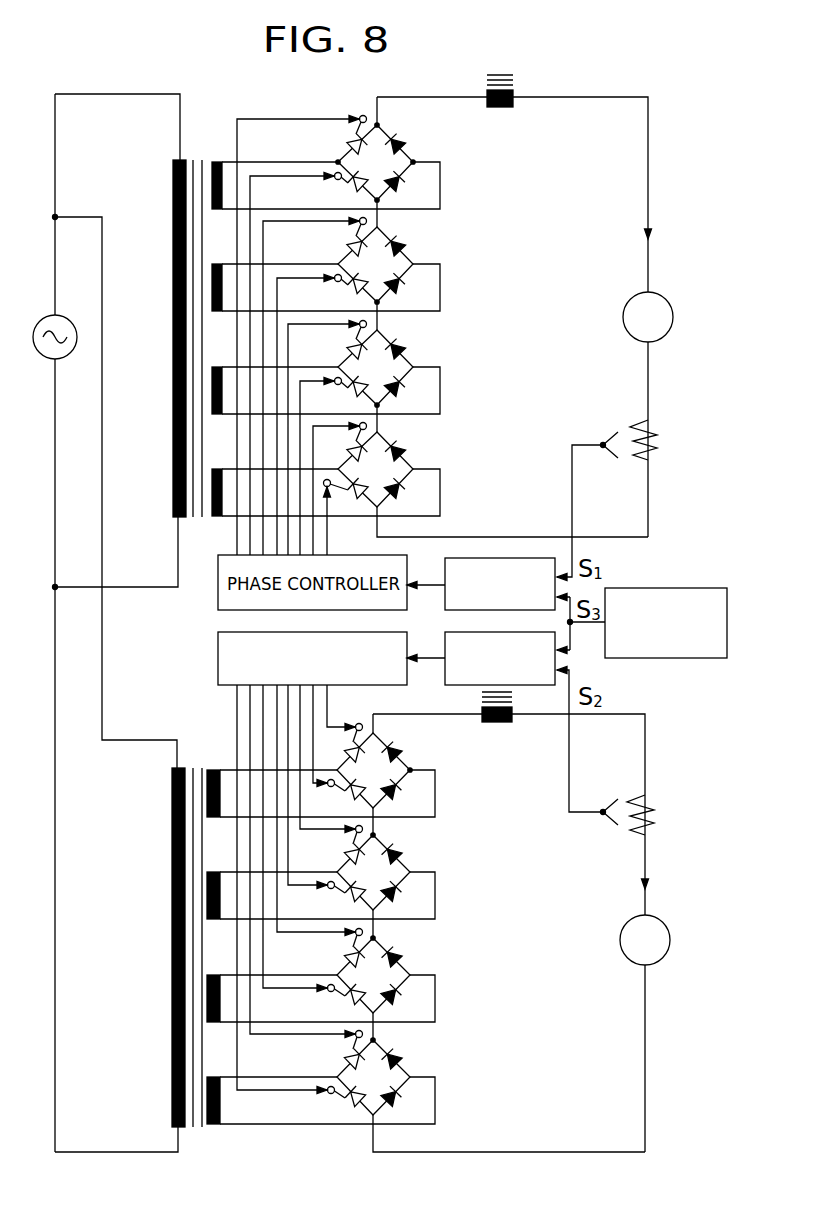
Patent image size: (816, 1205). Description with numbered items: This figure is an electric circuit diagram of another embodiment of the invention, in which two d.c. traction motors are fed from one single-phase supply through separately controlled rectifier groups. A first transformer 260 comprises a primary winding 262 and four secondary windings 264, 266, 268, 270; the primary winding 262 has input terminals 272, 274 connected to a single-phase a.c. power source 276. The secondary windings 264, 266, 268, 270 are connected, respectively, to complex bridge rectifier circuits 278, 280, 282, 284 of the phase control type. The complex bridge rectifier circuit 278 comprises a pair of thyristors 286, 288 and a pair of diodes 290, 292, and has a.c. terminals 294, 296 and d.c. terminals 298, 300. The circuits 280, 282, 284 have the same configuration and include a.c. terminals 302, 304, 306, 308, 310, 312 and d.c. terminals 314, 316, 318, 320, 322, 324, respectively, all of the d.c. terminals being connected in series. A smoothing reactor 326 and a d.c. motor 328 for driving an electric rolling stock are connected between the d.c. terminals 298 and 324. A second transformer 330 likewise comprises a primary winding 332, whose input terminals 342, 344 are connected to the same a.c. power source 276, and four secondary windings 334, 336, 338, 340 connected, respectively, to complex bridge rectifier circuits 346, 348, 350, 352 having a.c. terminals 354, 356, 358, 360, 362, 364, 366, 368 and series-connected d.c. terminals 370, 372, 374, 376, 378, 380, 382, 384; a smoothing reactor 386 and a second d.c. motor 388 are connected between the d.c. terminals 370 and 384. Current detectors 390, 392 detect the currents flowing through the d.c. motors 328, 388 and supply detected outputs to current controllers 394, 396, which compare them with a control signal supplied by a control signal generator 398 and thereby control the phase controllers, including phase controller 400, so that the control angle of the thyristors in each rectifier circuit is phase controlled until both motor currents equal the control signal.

The first transformer 260 is at (196, 150).
The primary winding 262 is at (173, 402).
The secondary winding 264 is at (224, 209).
The secondary winding 266 is at (224, 311).
The secondary winding 268 is at (224, 414).
The secondary winding 270 is at (218, 516).
The input terminal 272 is at (174, 158).
The input terminal 274 is at (175, 587).
The single-phase a.c. power source 276 is at (40, 356).
The complex bridge rectifier circuit 278 is at (432, 160).
The complex bridge rectifier circuit 280 is at (449, 272).
The complex bridge rectifier circuit 282 is at (449, 373).
The complex bridge rectifier circuit 284 is at (449, 476).
The thyristor 286 is at (352, 138).
The thyristor 288 is at (347, 185).
The diode 290 is at (404, 140).
The diode 292 is at (397, 185).
The a.c. terminal 294 is at (336, 161).
The a.c. terminal 296 is at (418, 164).
The d.c. terminal 298 is at (379, 124).
The d.c. terminal 300 is at (381, 205).
The a.c. terminal 302 is at (350, 248).
The a.c. terminal 304 is at (399, 287).
The a.c. terminal 306 is at (351, 344).
The a.c. terminal 308 is at (399, 389).
The a.c. terminal 310 is at (351, 446).
The a.c. terminal 312 is at (399, 490).
The d.c. terminal 314 is at (404, 248).
The d.c. terminal 316 is at (381, 307).
The d.c. terminal 318 is at (404, 355).
The d.c. terminal 320 is at (381, 410).
The d.c. terminal 322 is at (404, 457).
The d.c. terminal 324 is at (344, 509).
The smoothing reactor 326 is at (514, 108).
The d.c. motor 328 is at (672, 304).
The second transformer 330 is at (192, 763).
The primary winding 332 is at (172, 1020).
The secondary winding 334 is at (216, 817).
The secondary winding 336 is at (217, 919).
The secondary winding 338 is at (216, 1022).
The secondary winding 340 is at (217, 1127).
The input terminal 342 is at (166, 740).
The input terminal 344 is at (168, 1152).
The complex bridge rectifier circuit 346 is at (419, 745).
The complex bridge rectifier circuit 348 is at (421, 865).
The complex bridge rectifier circuit 350 is at (419, 968).
The complex bridge rectifier circuit 352 is at (421, 1075).
The a.c. terminal 354 is at (344, 748).
The a.c. terminal 356 is at (410, 770).
The a.c. terminal 358 is at (344, 858).
The a.c. terminal 360 is at (398, 896).
The a.c. terminal 362 is at (339, 964).
The a.c. terminal 364 is at (398, 996).
The a.c. terminal 366 is at (344, 1061).
The a.c. terminal 368 is at (398, 1098).
The d.c. terminal 370 is at (360, 723).
The d.c. terminal 372 is at (351, 798).
The d.c. terminal 374 is at (380, 835).
The d.c. terminal 376 is at (348, 899).
The d.c. terminal 378 is at (380, 936).
The d.c. terminal 380 is at (344, 1006).
The d.c. terminal 382 is at (380, 1043).
The d.c. terminal 384 is at (354, 1111).
The smoothing reactor 386 is at (497, 722).
The d.c. motor 388 is at (671, 940).
The current detector 390 is at (660, 440).
The current detector 392 is at (660, 812).
The current controller 394 is at (511, 558).
The current controller 396 is at (460, 685).
The control signal generator 398 is at (704, 588).
The phase controller 400 is at (218, 660).